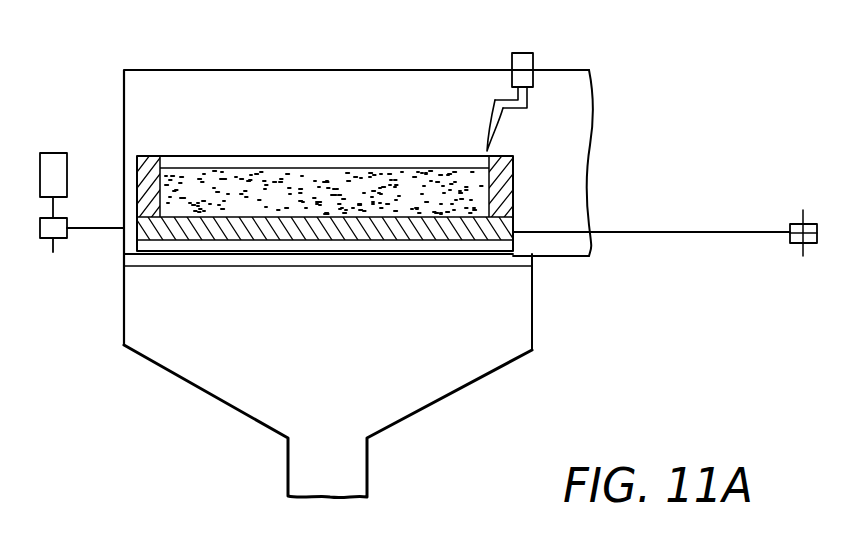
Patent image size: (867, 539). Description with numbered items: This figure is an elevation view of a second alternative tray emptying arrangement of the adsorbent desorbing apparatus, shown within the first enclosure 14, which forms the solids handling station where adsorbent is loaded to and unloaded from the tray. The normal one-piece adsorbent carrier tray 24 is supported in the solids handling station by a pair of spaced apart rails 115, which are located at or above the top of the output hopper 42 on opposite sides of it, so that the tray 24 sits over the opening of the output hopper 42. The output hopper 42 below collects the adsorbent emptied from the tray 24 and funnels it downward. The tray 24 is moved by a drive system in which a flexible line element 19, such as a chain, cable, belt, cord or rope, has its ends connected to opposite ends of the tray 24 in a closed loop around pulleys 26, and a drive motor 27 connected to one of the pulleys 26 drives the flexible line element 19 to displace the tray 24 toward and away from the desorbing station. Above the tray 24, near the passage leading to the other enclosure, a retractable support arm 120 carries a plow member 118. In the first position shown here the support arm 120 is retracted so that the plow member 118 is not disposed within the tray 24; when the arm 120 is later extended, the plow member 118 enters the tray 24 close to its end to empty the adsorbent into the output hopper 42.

The first enclosure 14 is at (368, 70).
The adsorbent carrier tray 24 is at (217, 149).
The drive motor 27 is at (58, 152).
The pulleys 26 is at (61, 240).
The flexible line element 19 is at (697, 232).
The retractable support arm 120 is at (528, 98).
The plow member 118 is at (505, 118).
The rails 115 is at (520, 260).
The output hopper 42 is at (188, 384).